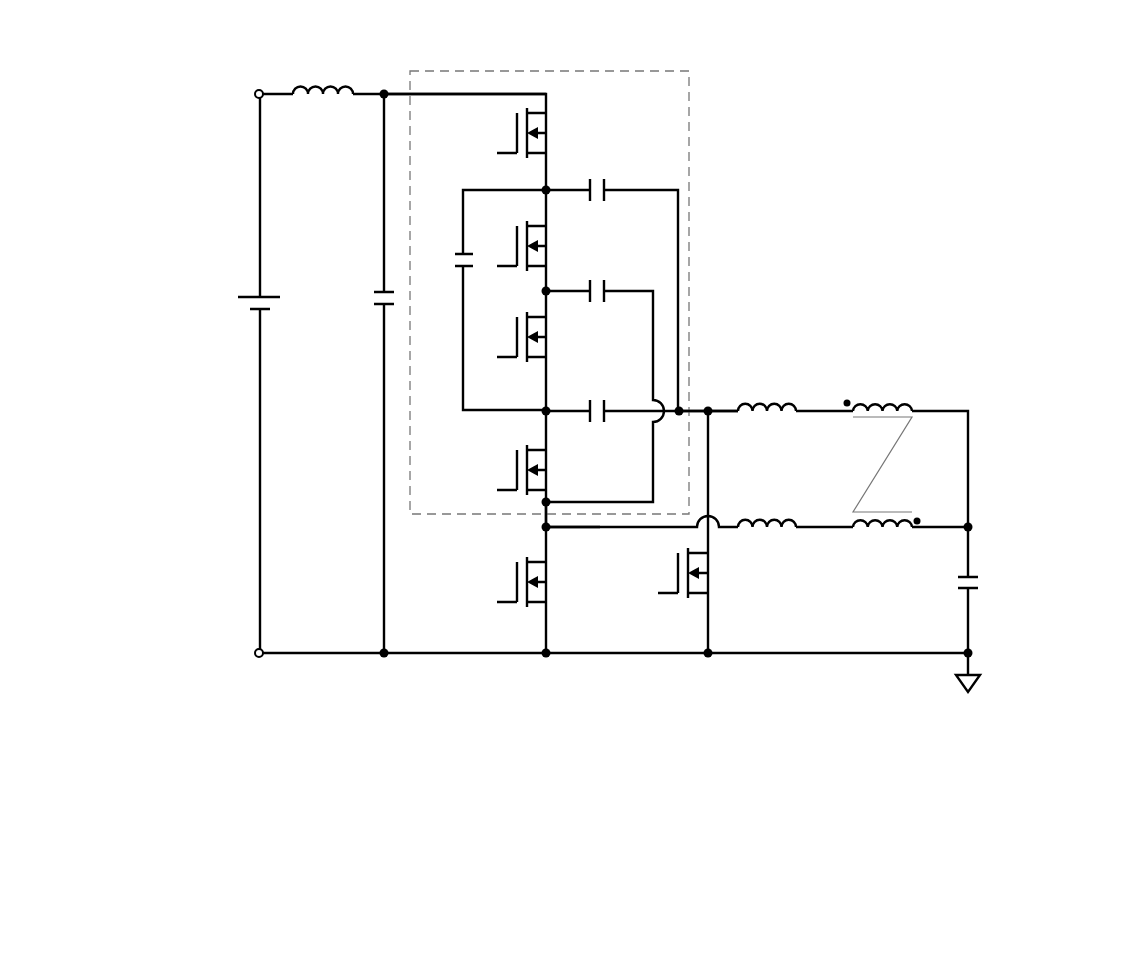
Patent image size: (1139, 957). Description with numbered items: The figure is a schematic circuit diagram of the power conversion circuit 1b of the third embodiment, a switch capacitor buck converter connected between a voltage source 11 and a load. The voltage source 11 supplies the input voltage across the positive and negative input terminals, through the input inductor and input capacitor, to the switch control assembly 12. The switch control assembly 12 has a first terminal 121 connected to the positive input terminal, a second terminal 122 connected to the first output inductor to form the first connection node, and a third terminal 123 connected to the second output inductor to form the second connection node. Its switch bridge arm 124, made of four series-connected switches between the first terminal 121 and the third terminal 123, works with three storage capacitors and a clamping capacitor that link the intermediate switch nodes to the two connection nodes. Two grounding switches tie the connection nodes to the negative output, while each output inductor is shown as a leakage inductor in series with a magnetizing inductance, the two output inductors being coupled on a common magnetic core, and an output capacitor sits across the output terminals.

The power conversion circuit 1b is at (1077, 68).
The voltage source 11 is at (258, 296).
The switch control assembly 12 is at (657, 71).
The first terminal 121 is at (410, 93).
The second terminal 122 is at (691, 409).
The third terminal 123 is at (545, 515).
The switch bridge arm 124 is at (563, 117).